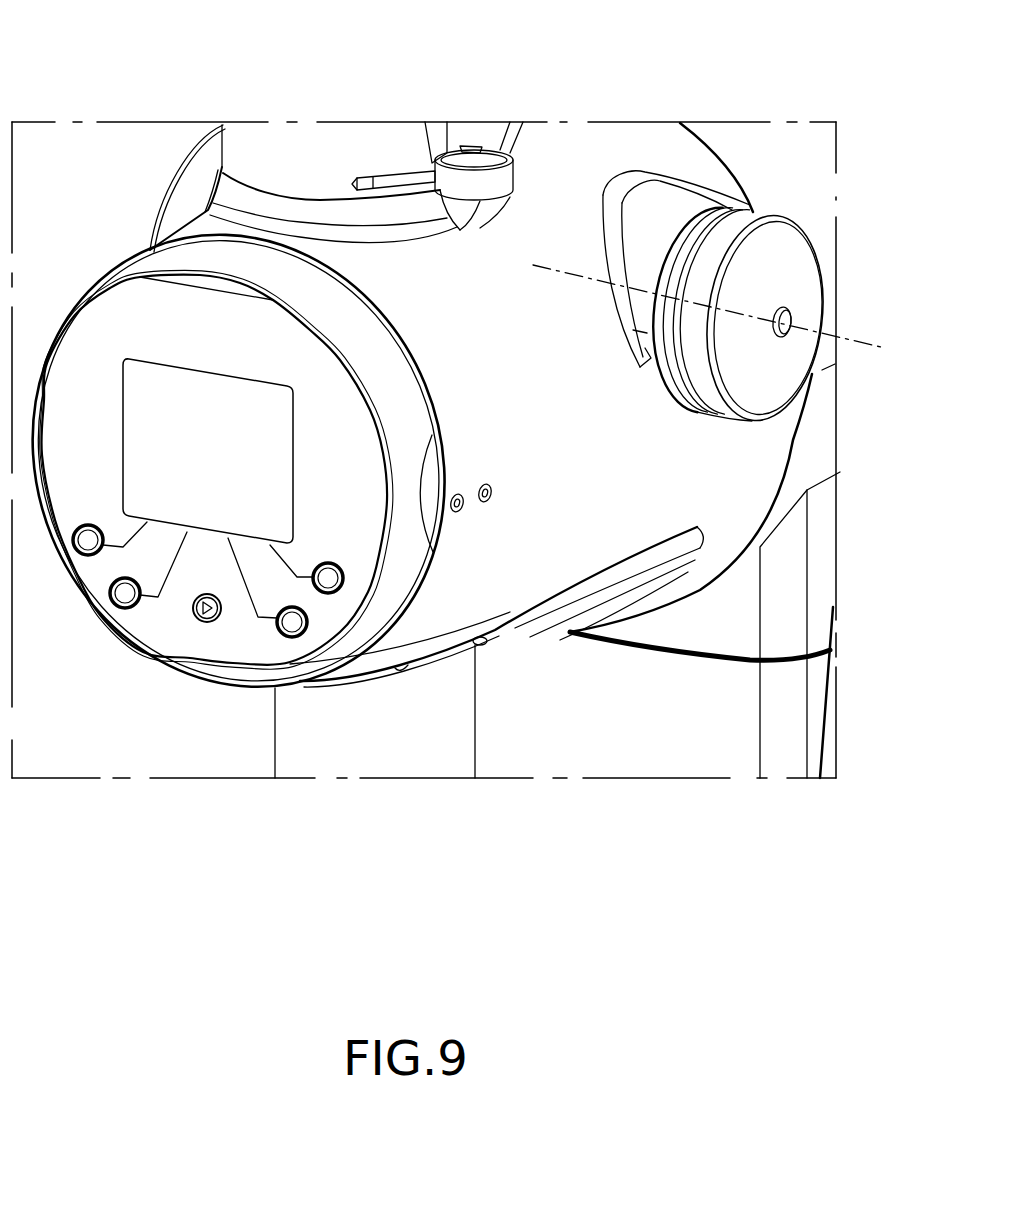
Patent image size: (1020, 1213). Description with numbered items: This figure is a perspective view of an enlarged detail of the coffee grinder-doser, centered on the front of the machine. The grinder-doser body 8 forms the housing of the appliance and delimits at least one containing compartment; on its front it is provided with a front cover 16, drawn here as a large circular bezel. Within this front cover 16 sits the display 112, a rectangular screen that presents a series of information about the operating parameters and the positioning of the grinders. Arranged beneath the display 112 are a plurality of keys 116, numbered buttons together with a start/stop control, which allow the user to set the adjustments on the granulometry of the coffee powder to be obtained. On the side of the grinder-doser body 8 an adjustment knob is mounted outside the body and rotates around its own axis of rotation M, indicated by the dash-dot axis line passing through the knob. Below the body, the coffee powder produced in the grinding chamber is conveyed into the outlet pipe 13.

The grinder-doser body 8 is at (633, 497).
The outlet pipe 13 is at (437, 742).
The front cover 16 is at (297, 280).
The display 112 is at (200, 410).
The keys 116 is at (84, 557).
The axis of rotation M is at (709, 308).